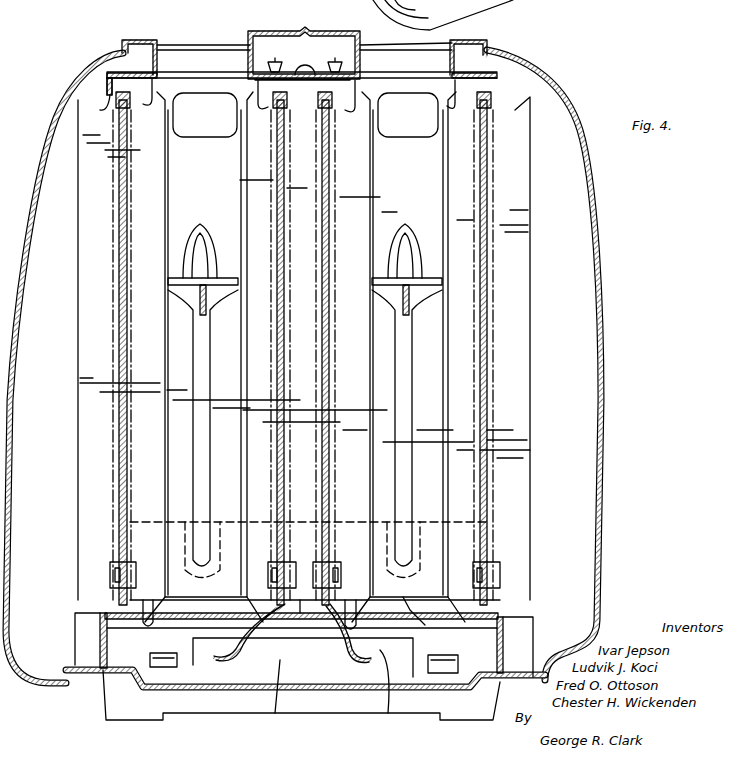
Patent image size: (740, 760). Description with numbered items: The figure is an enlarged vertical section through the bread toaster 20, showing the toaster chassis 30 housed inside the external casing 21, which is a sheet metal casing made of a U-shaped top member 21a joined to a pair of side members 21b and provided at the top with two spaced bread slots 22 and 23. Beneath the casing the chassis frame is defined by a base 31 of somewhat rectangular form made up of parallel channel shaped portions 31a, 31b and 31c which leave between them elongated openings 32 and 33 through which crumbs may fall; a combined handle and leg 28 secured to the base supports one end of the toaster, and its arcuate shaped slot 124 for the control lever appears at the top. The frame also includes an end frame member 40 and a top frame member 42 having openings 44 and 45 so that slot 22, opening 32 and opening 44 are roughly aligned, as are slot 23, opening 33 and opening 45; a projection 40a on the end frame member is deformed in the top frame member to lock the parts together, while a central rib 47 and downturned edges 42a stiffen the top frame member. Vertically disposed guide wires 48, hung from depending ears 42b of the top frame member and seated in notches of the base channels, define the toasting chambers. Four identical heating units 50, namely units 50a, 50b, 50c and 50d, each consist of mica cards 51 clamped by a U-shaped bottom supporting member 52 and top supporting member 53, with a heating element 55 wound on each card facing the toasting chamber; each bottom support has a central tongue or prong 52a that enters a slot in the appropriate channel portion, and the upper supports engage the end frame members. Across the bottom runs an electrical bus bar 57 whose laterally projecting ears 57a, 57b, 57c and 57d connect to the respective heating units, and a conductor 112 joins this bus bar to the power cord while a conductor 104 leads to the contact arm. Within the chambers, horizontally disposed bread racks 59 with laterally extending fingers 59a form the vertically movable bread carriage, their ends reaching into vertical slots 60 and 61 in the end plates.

The bread toaster 20 is at (614, 186).
The external casing 21 is at (610, 363).
The U-shaped top member 21a is at (283, 30).
The side members 21b is at (55, 195).
The bread slot 22 is at (243, 45).
The bread slot 23 is at (358, 42).
The combined handle and leg 28 is at (232, 705).
The toaster chassis 30 is at (69, 313).
The base 31 is at (107, 655).
The channel shaped portion 31a is at (98, 630).
The channel shaped portion 31b is at (302, 630).
The channel shaped portion 31c is at (535, 628).
The elongated opening 32 is at (155, 626).
The elongated opening 33 is at (358, 628).
The end frame member 40 is at (528, 152).
The projection 40a is at (133, 62).
The top frame member 42 is at (166, 48).
The downturned edges 42a is at (115, 78).
The depending ears 42b is at (152, 105).
The opening 44 is at (160, 76).
The opening 45 is at (366, 76).
The central rib 47 is at (304, 66).
The guide wires 48 is at (245, 160).
The heating unit 50 is at (519, 281).
The heating unit 50a is at (109, 255).
The heating unit 50b is at (266, 213).
The heating unit 50c is at (341, 202).
The heating unit 50d is at (498, 223).
The mica cards 51 is at (118, 343).
The bottom supporting member 52 is at (115, 602).
The tongue or prong 52a is at (112, 606).
The top supporting member 53 is at (114, 100).
The heating element 55 is at (275, 175).
The bus bar 57 is at (408, 608).
The laterally projecting ear 57a is at (122, 562).
The laterally projecting ear 57b is at (280, 560).
The laterally projecting ear 57c is at (310, 560).
The laterally projecting ear 57d is at (476, 565).
The bread rack 59 is at (200, 300).
The laterally extending fingers 59a is at (185, 245).
The vertical slot 60 is at (205, 370).
The vertical slot 61 is at (412, 342).
The conductor 104 is at (388, 710).
The conductor 112 is at (278, 710).
The arcuate shaped slot 124 is at (508, 0).